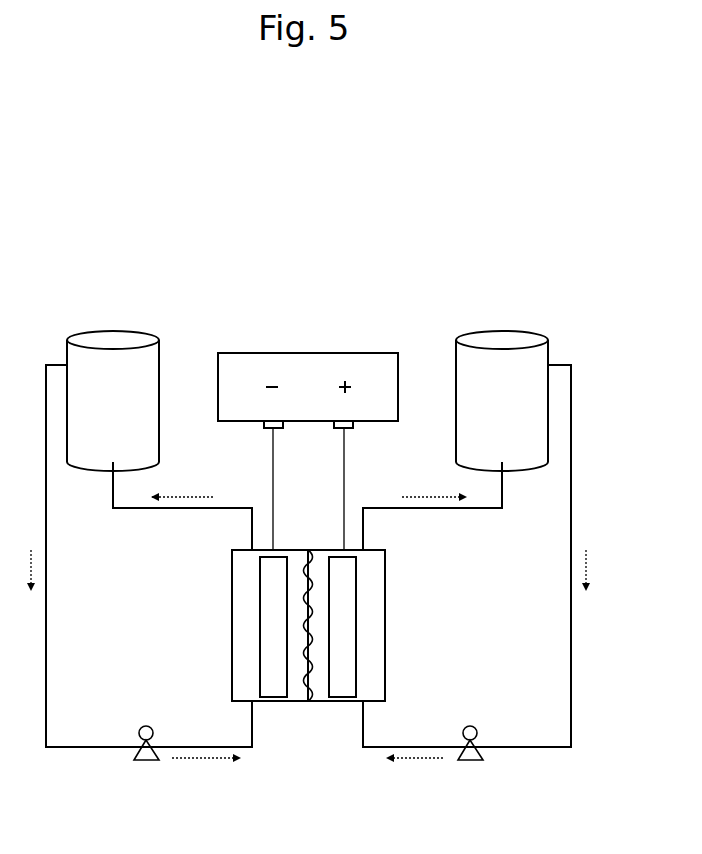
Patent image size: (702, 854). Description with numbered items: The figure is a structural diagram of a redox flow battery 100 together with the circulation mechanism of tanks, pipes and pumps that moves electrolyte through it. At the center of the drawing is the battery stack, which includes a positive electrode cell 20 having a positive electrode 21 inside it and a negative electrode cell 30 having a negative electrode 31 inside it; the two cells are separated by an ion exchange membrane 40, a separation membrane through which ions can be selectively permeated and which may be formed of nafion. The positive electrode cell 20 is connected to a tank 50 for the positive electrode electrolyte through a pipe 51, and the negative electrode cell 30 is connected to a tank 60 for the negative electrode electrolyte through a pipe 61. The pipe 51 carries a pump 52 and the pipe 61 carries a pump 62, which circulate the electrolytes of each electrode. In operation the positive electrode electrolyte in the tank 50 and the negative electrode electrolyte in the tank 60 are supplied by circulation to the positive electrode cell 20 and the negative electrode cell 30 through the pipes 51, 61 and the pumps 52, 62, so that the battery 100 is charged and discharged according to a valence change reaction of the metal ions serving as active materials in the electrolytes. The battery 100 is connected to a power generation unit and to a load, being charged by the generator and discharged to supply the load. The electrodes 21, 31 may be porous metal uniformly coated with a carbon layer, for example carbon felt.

The redox flow battery 100 is at (333, 222).
The tank for negative electrode electrolyte 60 is at (165, 347).
The tank for positive electrode electrolyte 50 is at (450, 347).
The negative electrode cell 30 is at (273, 703).
The negative electrode 31 is at (258, 593).
The positive electrode cell 20 is at (343, 703).
The positive electrode 21 is at (360, 593).
The ion exchange membrane 40 is at (316, 702).
The pipe 61 is at (193, 743).
The pump 62 is at (146, 725).
The pipe 51 is at (421, 743).
The pump 52 is at (470, 725).